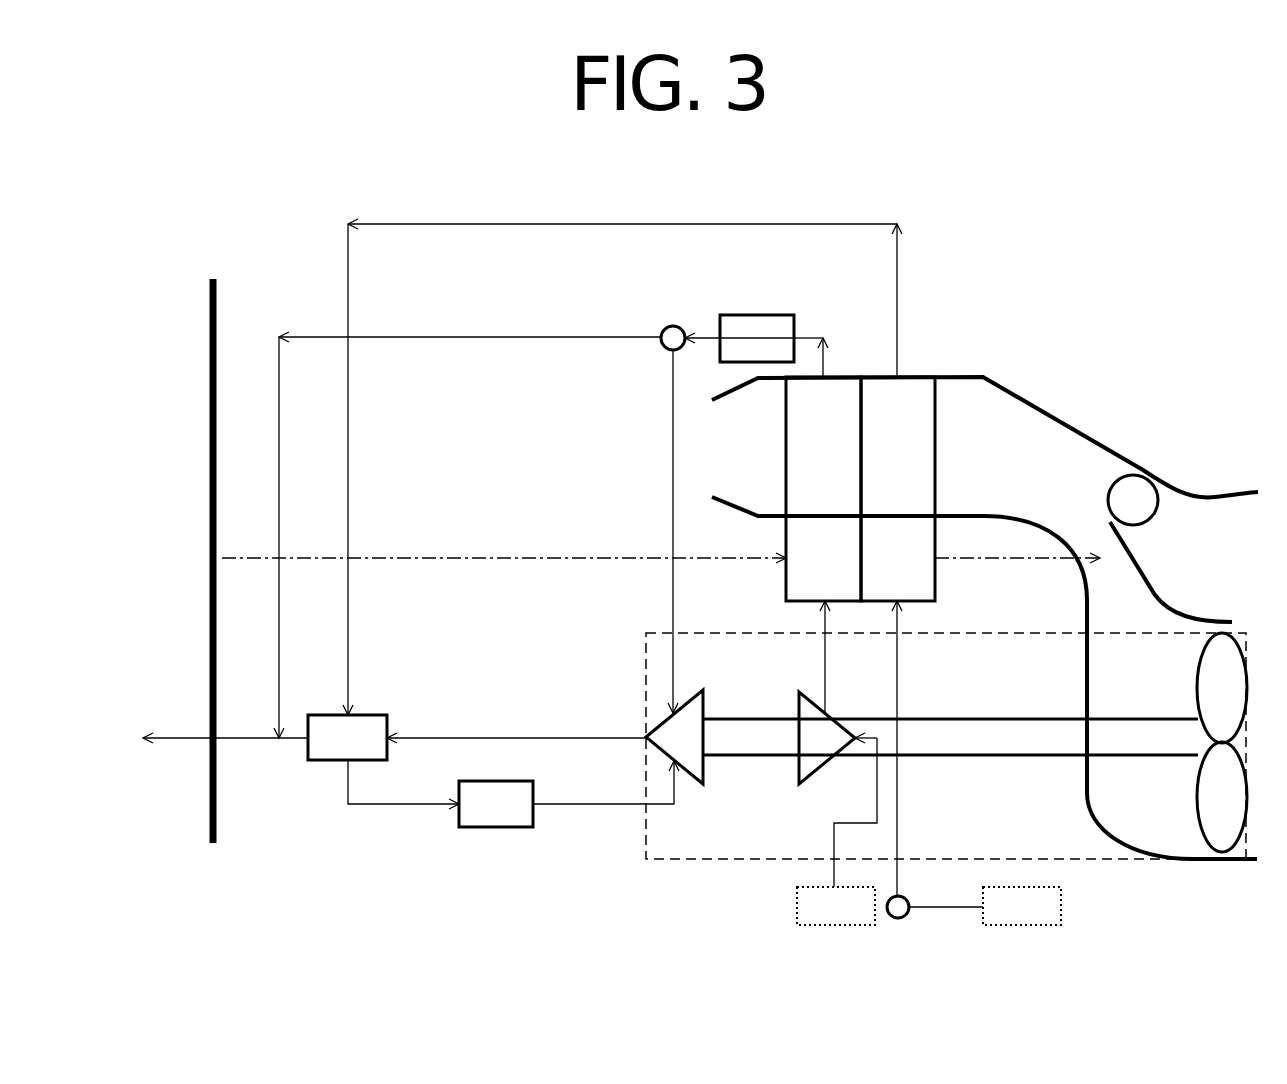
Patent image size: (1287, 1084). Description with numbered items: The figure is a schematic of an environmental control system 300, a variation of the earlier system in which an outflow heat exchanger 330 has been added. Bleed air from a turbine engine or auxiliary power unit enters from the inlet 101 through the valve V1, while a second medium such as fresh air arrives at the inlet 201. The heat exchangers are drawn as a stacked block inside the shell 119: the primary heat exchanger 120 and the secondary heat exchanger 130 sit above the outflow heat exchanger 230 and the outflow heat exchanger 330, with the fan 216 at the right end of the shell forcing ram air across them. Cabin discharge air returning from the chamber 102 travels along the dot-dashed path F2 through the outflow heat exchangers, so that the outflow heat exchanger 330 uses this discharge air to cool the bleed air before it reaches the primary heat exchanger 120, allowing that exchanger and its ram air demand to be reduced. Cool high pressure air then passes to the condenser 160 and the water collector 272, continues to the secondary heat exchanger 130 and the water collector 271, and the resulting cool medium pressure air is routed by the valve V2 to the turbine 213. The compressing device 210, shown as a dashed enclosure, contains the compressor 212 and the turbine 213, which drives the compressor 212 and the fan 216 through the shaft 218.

The environmental control system 300 is at (1200, 126).
The chamber 102 is at (210, 279).
The water collector 271 is at (739, 351).
The secondary heat exchanger 130 is at (805, 460).
The primary heat exchanger 120 is at (880, 460).
The outflow heat exchanger 230 is at (805, 571).
The outflow heat exchanger 330 is at (880, 571).
The shell 119 is at (1132, 463).
The path for a medium F2 is at (437, 557).
The valve V2 is at (663, 330).
The valve V1 is at (904, 916).
The compressing device 210 is at (739, 864).
The condenser 160 is at (330, 751).
The water collector 272 is at (478, 817).
The turbine 213 is at (668, 750).
The compressor 212 is at (804, 750).
The shaft 218 is at (1029, 757).
The fan 216 is at (1138, 796).
The inlet 201 is at (836, 906).
The inlet 101 is at (1022, 906).